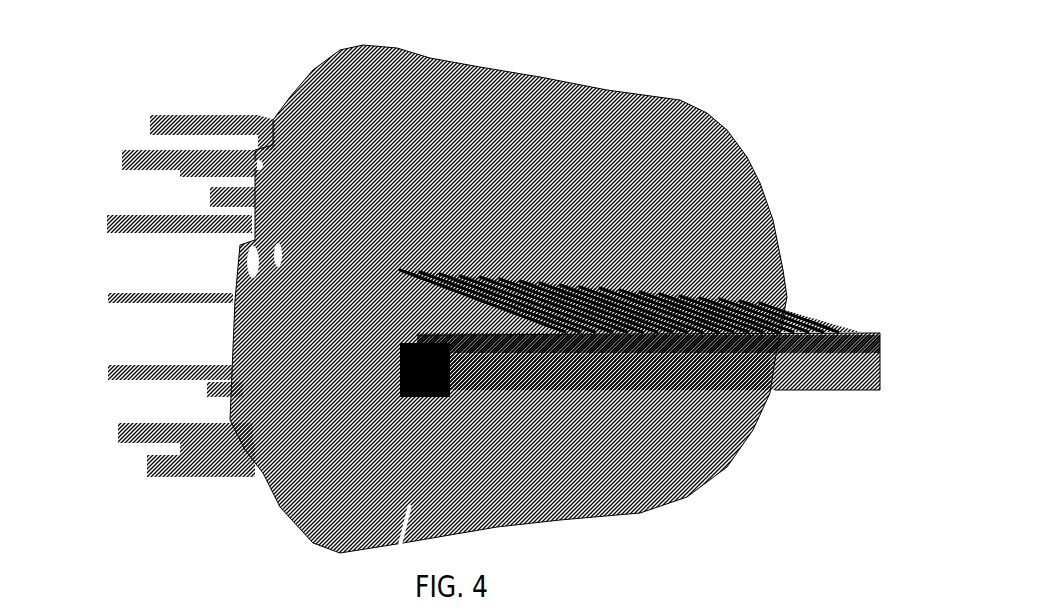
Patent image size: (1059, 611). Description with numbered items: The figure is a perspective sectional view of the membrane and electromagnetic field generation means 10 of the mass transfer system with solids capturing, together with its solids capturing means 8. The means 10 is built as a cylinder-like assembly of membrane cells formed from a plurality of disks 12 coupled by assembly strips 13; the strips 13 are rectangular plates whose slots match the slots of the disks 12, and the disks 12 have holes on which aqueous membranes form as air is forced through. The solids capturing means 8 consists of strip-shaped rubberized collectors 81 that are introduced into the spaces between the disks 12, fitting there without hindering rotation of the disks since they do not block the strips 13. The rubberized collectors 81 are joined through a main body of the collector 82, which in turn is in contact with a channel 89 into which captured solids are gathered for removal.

The solids capturing means 8 is at (848, 311).
The membrane and electromagnetic field generation means 10 is at (519, 291).
The disks 12 is at (628, 96).
The assembly strips 13 is at (132, 170).
The rubberized collectors 81 is at (764, 299).
The main body of the collector 82 is at (404, 383).
The channel 89 is at (477, 400).